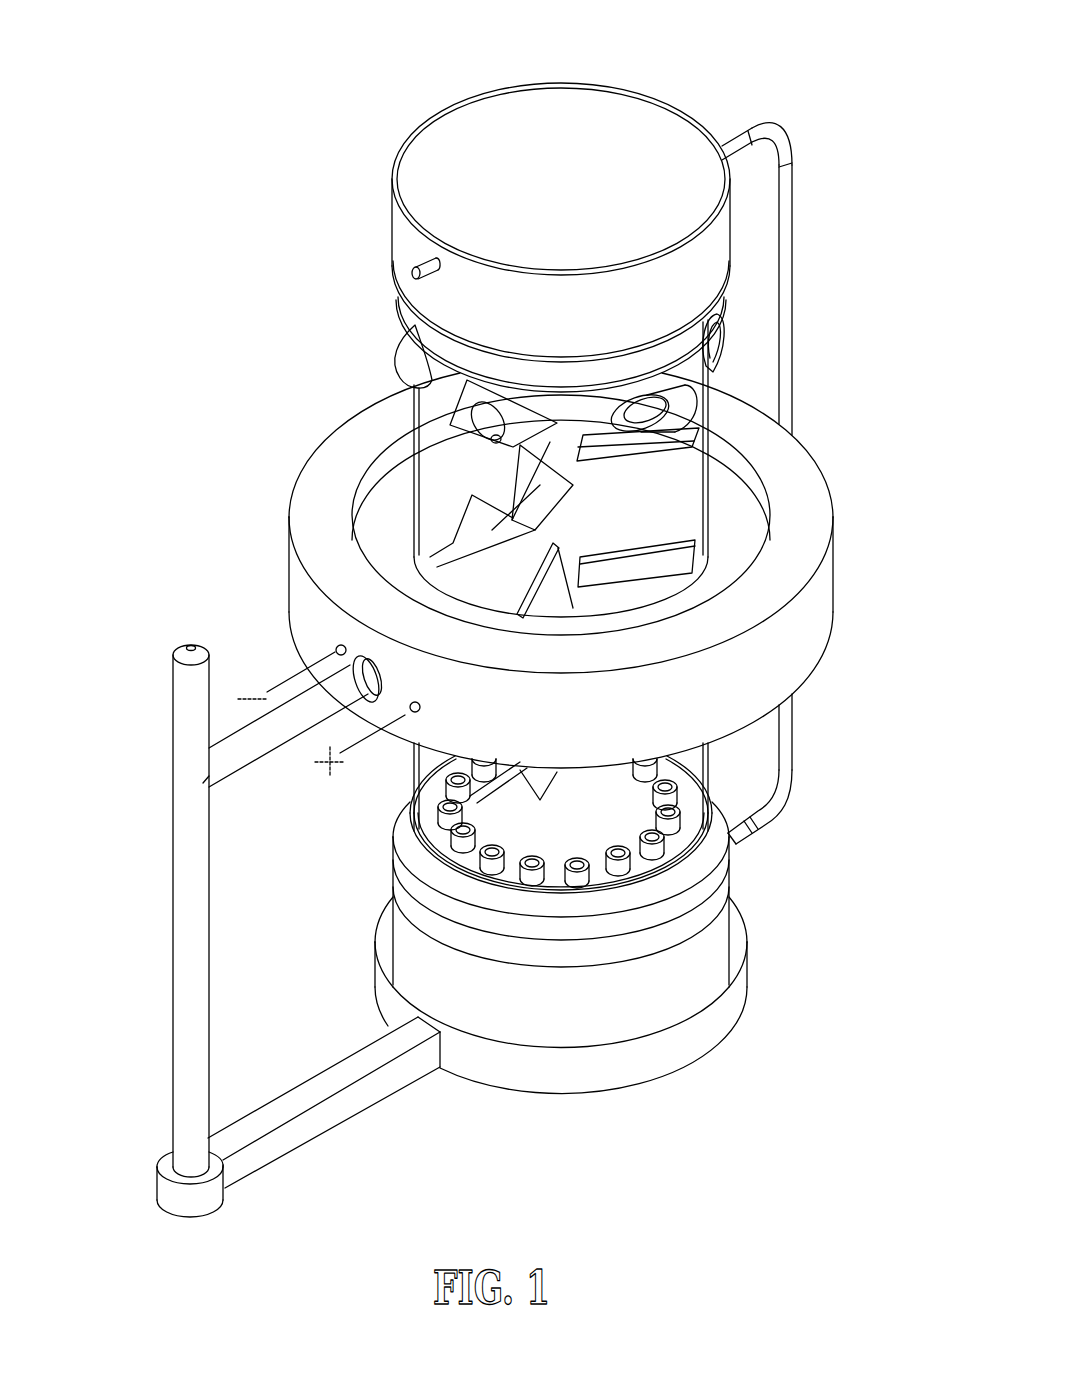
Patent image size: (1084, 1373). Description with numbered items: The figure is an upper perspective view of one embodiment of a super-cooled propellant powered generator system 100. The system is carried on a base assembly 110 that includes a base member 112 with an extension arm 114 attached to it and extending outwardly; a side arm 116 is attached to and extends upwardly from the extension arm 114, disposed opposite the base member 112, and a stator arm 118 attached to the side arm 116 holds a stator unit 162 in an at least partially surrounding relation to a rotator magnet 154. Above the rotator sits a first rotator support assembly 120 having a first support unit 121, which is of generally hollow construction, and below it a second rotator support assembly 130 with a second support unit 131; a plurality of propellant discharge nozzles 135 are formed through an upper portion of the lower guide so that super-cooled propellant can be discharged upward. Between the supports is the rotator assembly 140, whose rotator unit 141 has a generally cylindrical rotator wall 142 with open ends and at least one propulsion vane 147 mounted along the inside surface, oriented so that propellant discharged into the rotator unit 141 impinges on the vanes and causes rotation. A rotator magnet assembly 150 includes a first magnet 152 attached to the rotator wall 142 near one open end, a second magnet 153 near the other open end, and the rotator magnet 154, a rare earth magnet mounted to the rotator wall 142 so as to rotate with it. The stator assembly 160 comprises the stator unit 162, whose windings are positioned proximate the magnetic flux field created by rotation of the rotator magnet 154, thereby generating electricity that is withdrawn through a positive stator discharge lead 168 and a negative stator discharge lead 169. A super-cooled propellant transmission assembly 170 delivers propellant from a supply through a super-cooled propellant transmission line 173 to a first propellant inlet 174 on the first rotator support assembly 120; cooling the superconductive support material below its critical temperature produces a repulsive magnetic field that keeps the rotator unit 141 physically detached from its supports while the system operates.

The super-cooled propellant powered generator system 100 is at (495, 610).
The base assembly 110 is at (402, 931).
The base member 112 is at (680, 1068).
The extension arm 114 is at (387, 1098).
The side arm 116 is at (178, 900).
The stator arm 118 is at (252, 763).
The first rotator support assembly 120 is at (509, 229).
The first support unit 121 is at (403, 248).
The second rotator support assembly 130 is at (624, 930).
The second support unit 131 is at (710, 973).
The propellant discharge nozzles 135 is at (648, 854).
The rotator assembly 140 is at (502, 942).
The rotator unit 141 is at (707, 407).
The rotator wall 142 is at (707, 467).
The propulsion vane 147 is at (553, 507).
The rotator magnet assembly 150 is at (572, 543).
The first magnet 152 is at (400, 325).
The second magnet 153 is at (440, 873).
The rotator magnet 154 is at (745, 527).
The stator assembly 160 is at (581, 575).
The stator unit 162 is at (833, 607).
The positive stator discharge lead 168 is at (412, 712).
The negative stator discharge lead 169 is at (317, 683).
The super-cooled propellant transmission assembly 170 is at (816, 482).
The super-cooled propellant transmission line 173 is at (792, 203).
The first propellant inlet 174 is at (438, 278).